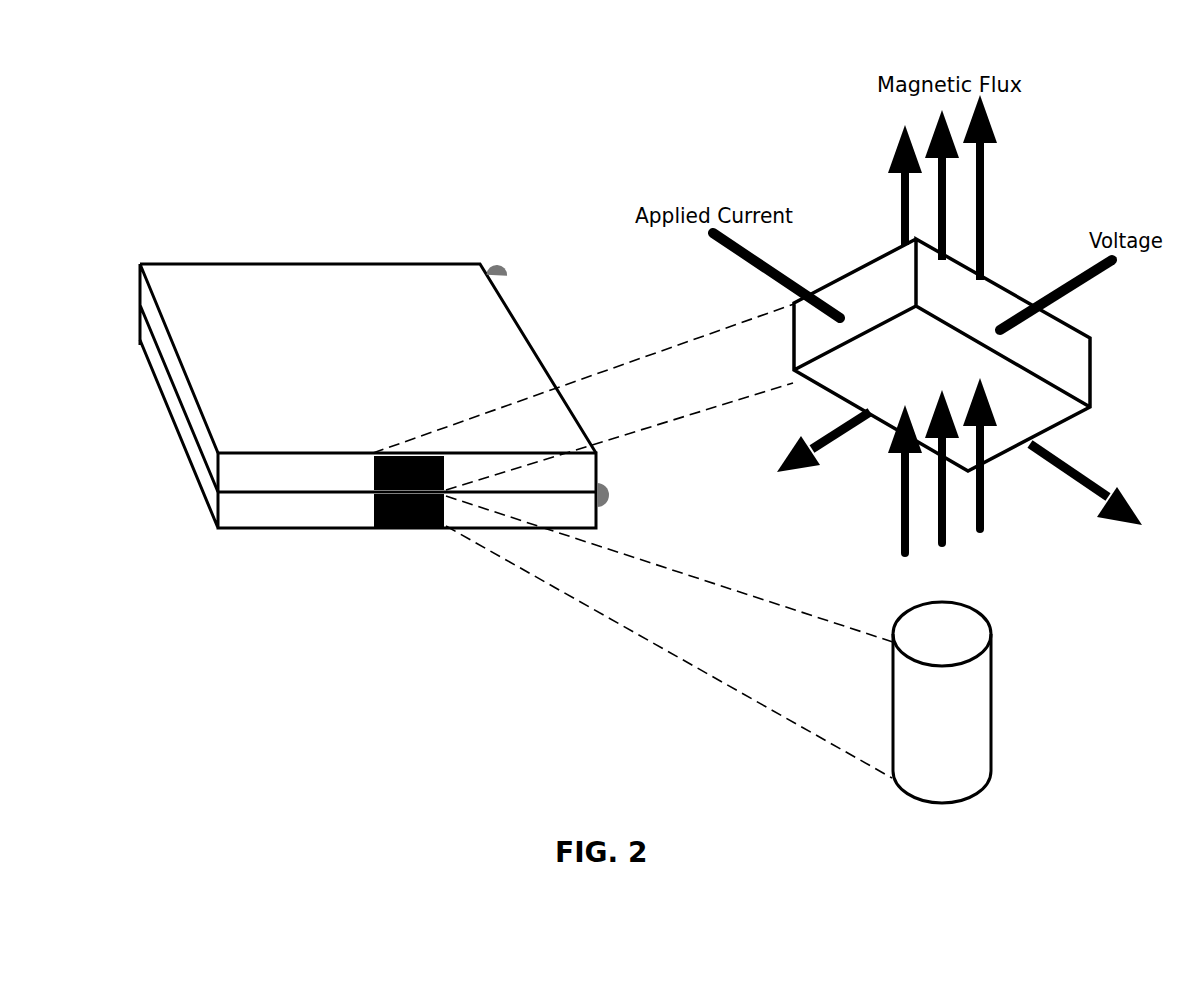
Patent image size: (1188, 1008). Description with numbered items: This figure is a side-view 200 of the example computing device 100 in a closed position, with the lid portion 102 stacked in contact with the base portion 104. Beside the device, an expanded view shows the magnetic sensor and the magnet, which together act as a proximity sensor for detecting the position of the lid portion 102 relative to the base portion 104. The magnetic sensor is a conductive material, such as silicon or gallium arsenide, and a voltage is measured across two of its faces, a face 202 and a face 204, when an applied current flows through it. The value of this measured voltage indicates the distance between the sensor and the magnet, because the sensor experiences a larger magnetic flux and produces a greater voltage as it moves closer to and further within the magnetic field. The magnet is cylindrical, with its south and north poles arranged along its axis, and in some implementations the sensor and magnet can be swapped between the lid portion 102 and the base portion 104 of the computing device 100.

The computing device 100 is at (374, 397).
The lid portion 102 is at (185, 262).
The base portion 104 is at (240, 530).
The side-view 200 is at (292, 552).
The face 202 is at (1057, 334).
The face 204 is at (884, 422).